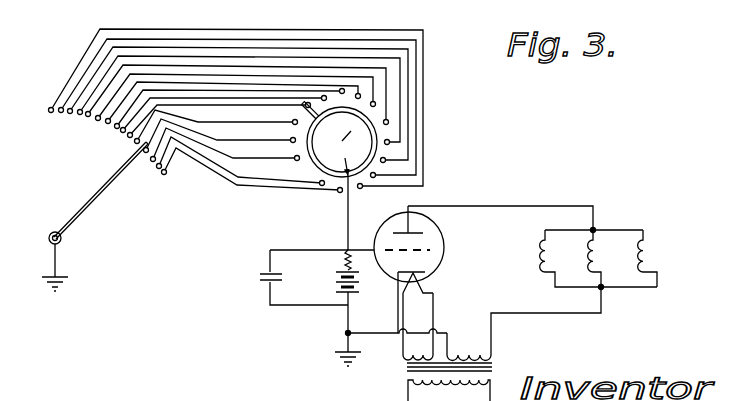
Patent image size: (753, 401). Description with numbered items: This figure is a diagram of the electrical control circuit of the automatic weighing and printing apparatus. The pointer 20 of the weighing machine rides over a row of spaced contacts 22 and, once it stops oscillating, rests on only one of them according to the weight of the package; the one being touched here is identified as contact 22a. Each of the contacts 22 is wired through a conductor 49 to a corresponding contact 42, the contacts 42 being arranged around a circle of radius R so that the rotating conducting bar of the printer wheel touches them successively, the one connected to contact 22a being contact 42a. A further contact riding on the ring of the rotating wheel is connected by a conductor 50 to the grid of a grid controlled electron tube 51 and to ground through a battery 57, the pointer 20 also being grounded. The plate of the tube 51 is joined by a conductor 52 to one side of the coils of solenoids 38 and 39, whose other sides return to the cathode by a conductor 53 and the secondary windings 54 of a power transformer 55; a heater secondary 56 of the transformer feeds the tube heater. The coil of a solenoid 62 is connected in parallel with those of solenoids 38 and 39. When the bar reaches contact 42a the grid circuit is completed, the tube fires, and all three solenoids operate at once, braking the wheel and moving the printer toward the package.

The pointer 20 is at (98, 198).
The contacts 22 is at (115, 128).
The contact 22a is at (146, 153).
The solenoid 38 is at (537, 249).
The solenoid 39 is at (594, 250).
The contact members 42 is at (379, 125).
The contact 42a is at (299, 135).
The conductors 49 is at (249, 188).
The conductor 50 is at (344, 226).
The grid controlled electron tube 51 is at (445, 247).
The conductor 52 is at (532, 206).
The conductor 53 is at (556, 316).
The secondary windings 54 is at (468, 352).
The power transformer 55 is at (494, 371).
The heater secondary 56 is at (405, 359).
The battery 57 is at (356, 294).
The solenoid 62 is at (645, 250).